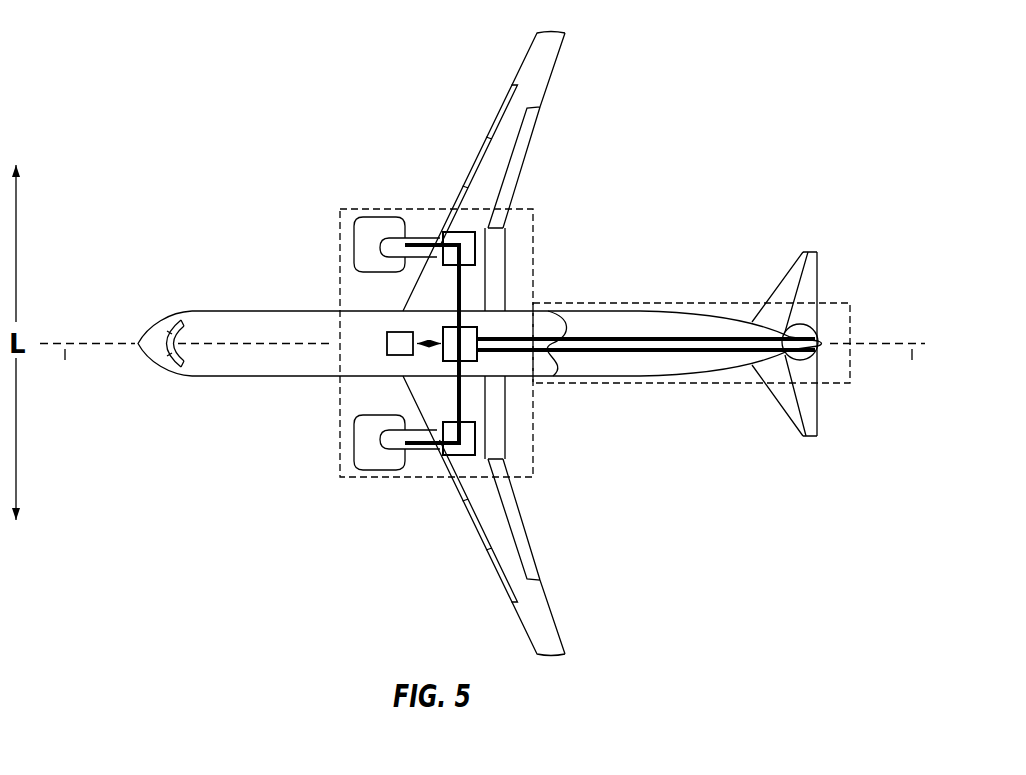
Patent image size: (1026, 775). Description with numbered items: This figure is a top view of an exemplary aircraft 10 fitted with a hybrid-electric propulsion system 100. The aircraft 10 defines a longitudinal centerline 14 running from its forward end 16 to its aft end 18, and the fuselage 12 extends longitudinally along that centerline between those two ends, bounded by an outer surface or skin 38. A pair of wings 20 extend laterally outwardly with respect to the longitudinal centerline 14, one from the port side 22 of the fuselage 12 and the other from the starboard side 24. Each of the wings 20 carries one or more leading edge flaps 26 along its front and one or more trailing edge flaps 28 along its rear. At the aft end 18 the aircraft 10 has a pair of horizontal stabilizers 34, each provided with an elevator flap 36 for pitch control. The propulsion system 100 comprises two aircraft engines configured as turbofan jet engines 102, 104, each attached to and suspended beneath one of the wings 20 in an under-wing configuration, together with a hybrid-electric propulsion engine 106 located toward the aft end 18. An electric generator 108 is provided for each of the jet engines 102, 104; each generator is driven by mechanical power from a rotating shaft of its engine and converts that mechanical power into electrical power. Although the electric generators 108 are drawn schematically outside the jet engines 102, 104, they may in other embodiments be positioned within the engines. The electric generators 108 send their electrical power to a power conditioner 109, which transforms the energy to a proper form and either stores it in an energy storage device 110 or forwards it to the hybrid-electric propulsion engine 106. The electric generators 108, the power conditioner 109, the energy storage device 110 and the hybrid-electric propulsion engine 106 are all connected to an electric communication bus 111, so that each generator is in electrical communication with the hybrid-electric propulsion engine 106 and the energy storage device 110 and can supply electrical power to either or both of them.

The aircraft 10 is at (679, 128).
The fuselage 12 is at (480, 338).
The longitudinal centerline 14 is at (482, 373).
The forward end 16 is at (138, 358).
The aft end 18 is at (803, 350).
The wings 20 is at (508, 344).
The port side 22 is at (268, 393).
The starboard side 24 is at (272, 308).
The leading edge flaps 26 is at (472, 528).
The trailing edge flaps 28 is at (535, 532).
The horizontal stabilizers 34 is at (793, 273).
The elevator flap 36 is at (815, 265).
The outer surface or skin 38 is at (630, 357).
The propulsion system 100 is at (600, 298).
The turbofan jet engine 102 is at (368, 462).
The turbofan jet engine 104 is at (372, 220).
The hybrid-electric propulsion engine 106 is at (818, 320).
The electric generators 108 is at (478, 242).
The power conditioner 109 is at (478, 330).
The energy storage device 110 is at (390, 357).
The electric communication bus 111 is at (515, 360).